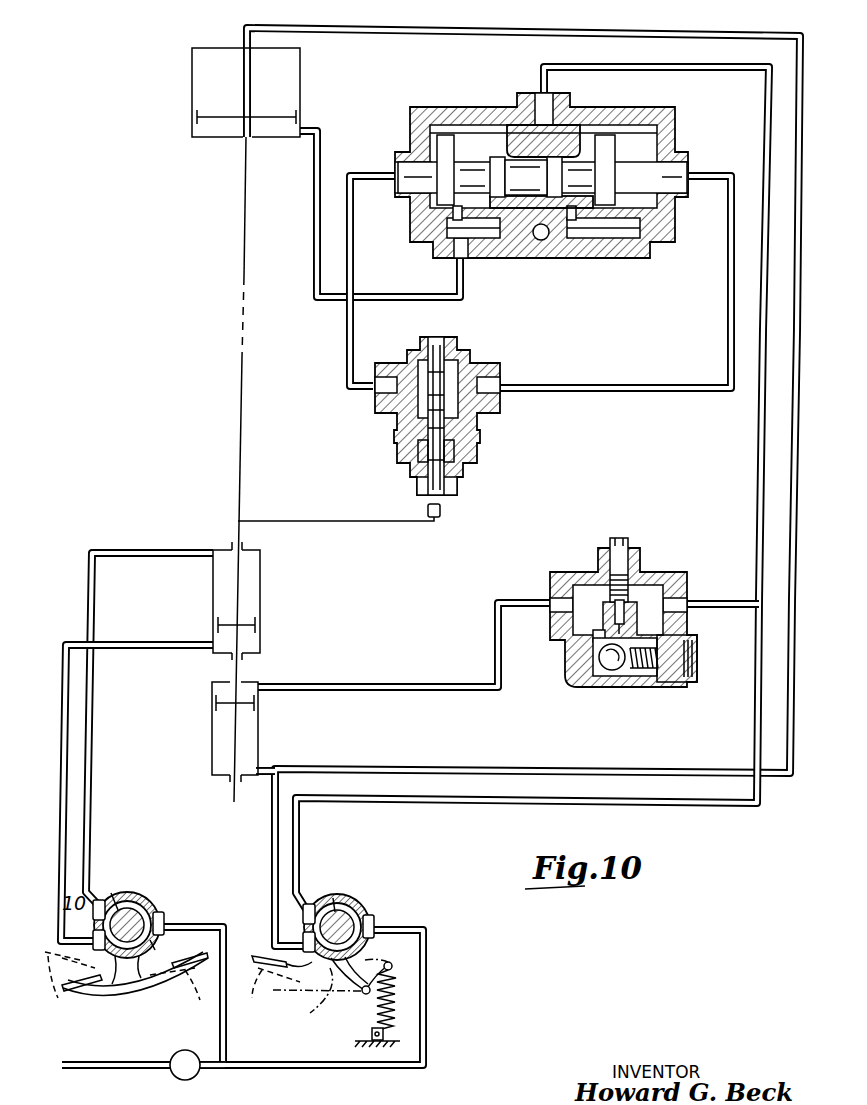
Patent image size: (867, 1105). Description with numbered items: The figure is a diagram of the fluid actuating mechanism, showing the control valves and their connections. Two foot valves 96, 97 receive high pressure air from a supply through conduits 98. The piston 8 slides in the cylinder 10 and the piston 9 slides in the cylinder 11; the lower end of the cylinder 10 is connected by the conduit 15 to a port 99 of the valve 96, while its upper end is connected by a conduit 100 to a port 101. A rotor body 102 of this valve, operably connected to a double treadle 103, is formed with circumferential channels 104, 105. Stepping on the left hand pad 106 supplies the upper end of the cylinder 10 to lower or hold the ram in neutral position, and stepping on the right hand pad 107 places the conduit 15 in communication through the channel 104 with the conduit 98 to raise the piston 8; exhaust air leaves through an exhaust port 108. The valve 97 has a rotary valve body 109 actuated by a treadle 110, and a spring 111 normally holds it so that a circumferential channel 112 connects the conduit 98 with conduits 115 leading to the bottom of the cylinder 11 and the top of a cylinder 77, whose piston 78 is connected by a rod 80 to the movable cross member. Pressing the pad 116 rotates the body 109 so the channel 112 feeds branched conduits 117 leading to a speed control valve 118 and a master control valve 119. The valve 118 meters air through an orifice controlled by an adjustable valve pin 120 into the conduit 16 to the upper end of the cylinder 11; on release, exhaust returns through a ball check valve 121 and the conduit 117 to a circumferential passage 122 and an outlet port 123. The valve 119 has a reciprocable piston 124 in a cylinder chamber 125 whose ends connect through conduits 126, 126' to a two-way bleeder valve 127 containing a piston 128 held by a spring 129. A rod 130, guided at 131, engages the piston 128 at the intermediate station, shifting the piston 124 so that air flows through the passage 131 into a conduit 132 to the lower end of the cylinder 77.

The piston 8 is at (248, 620).
The piston 9 is at (212, 693).
The cylinder 10 is at (262, 570).
The cylinder 11 is at (212, 740).
The conduit 15 is at (118, 646).
The conduit 16 is at (362, 686).
The cylinder 77 is at (302, 71).
The piston 78 is at (224, 117).
The rod 80 is at (243, 207).
The foot valve 96 is at (133, 895).
The foot valve 97 is at (350, 900).
The conduit 98 is at (218, 918).
The port 99 is at (93, 940).
The conduit 100 is at (94, 616).
The port 101 is at (109, 890).
The rotor body 102 is at (138, 905).
The double treadle 103 is at (123, 997).
The circumferential channel 104 is at (156, 918).
The circumferential channel 105 is at (155, 944).
The left hand pad 106 is at (50, 972).
The right hand pad 107 is at (190, 972).
The exhaust port 108 is at (93, 912).
The rotary valve body 109 is at (334, 895).
The treadle 110 is at (325, 995).
The spring 111 is at (370, 1020).
The circumferential channel 112 is at (370, 920).
The conduit 115 is at (364, 30).
The pad 116 is at (258, 975).
The branched conduit 117 is at (758, 464).
The speed control valve 118 is at (638, 570).
The master control valve 119 is at (615, 250).
The valve pin 120 is at (614, 607).
The ball check valve 121 is at (612, 670).
The circumferential passage 122 is at (303, 914).
The outlet port 123 is at (303, 938).
The reciprocable piston 124 is at (600, 182).
The cylinder chamber 125 is at (640, 203).
The conduit 126 is at (344, 281).
The conduit 126' is at (615, 282).
The two-way bleeder valve 127 is at (466, 366).
The piston 128 is at (428, 444).
The spring 129 is at (460, 468).
The rod 130 is at (440, 509).
The passage 131 is at (500, 236).
The conduit 132 is at (314, 258).